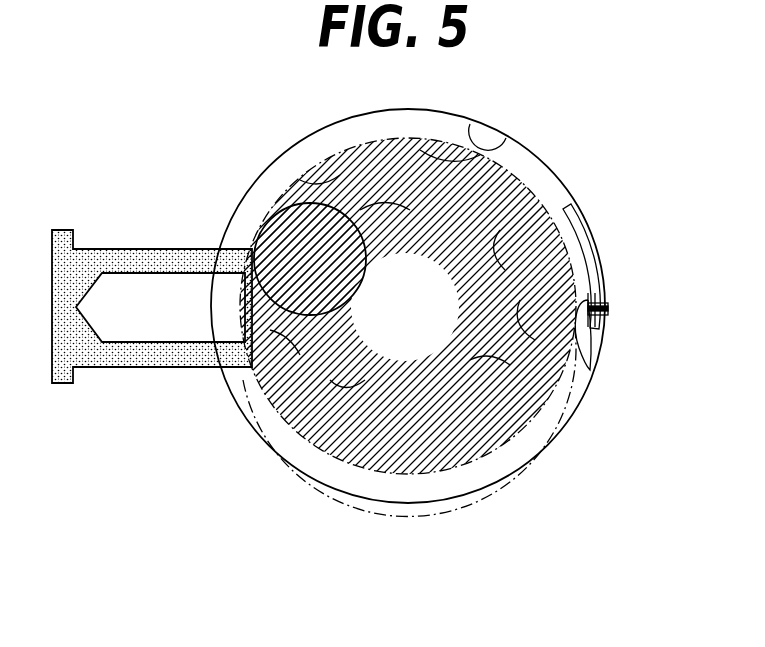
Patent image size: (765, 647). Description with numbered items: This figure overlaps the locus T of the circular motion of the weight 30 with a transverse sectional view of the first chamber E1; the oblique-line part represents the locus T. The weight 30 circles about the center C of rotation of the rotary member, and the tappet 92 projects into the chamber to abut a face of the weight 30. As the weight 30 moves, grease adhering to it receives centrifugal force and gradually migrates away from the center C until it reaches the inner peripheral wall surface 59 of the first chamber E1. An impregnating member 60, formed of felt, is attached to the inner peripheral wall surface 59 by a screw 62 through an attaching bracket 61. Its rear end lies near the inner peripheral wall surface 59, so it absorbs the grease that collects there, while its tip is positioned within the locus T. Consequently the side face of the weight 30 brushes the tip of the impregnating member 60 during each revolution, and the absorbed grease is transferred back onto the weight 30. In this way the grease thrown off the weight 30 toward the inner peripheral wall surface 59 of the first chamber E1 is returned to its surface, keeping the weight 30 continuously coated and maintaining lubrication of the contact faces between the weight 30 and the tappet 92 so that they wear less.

The weight 30 is at (289, 203).
The inner peripheral wall surface 59 is at (508, 133).
The impregnating member 60 is at (577, 264).
The attaching bracket 61 is at (583, 228).
The screw 62 is at (590, 368).
The tappet 92 is at (155, 368).
The locus T is at (528, 412).
The first chamber E1 is at (483, 472).
The center C is at (405, 308).